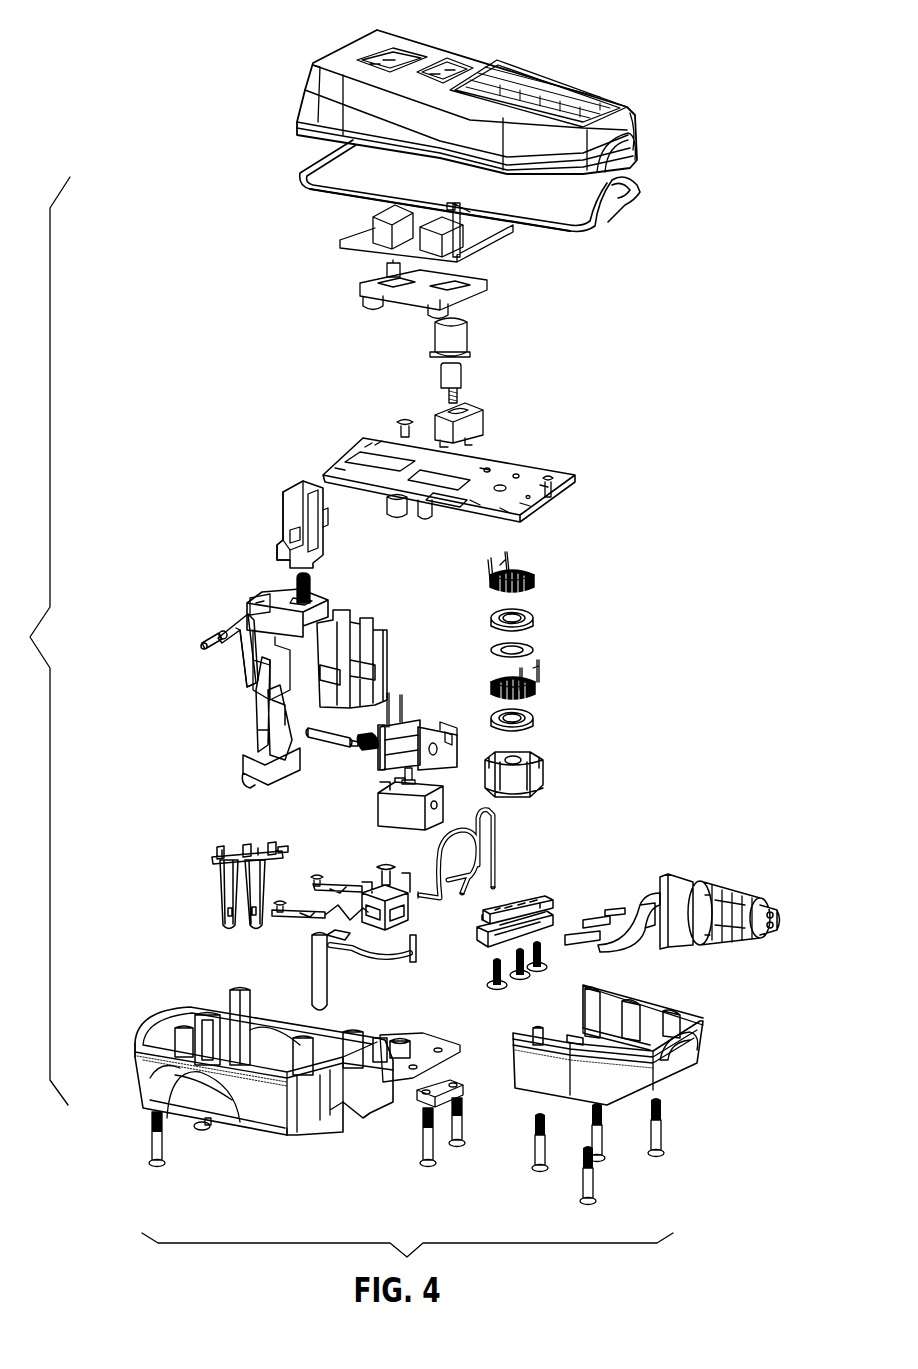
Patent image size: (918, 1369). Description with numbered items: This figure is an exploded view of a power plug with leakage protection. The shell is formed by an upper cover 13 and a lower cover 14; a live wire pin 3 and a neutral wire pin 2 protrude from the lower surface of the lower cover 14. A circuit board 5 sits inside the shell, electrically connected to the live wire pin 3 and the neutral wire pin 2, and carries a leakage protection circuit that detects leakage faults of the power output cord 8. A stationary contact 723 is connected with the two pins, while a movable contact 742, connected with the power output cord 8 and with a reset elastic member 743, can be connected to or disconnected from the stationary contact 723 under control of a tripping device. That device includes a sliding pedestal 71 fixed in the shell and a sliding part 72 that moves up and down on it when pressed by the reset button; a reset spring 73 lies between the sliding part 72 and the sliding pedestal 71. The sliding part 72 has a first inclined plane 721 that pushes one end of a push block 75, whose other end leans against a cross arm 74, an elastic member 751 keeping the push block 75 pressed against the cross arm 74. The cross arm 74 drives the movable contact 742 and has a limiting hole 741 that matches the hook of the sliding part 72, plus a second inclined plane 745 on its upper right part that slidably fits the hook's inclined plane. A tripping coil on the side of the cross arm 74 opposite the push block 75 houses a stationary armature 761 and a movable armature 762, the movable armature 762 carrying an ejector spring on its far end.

The upper cover 13 is at (375, 120).
The circuit board 5 is at (375, 440).
The sliding part 72 is at (292, 520).
The first inclined plane 721 is at (283, 530).
The reset spring 73 is at (293, 583).
The sliding pedestal 71 is at (323, 608).
The second inclined plane 745 is at (287, 697).
The limiting hole 741 is at (340, 687).
The elastic member 751 is at (227, 623).
The push block 75 is at (230, 665).
The cross arm 74 is at (257, 717).
The movable armature 762 is at (325, 740).
The stationary armature 761 is at (370, 747).
The stationary contact 723 is at (275, 850).
The movable contact 742 is at (280, 900).
The reset elastic member 743 is at (320, 913).
The neutral wire pin 2 is at (222, 897).
The live wire pin 3 is at (255, 922).
The power output cord 8 is at (657, 893).
The lower cover 14 is at (258, 1112).